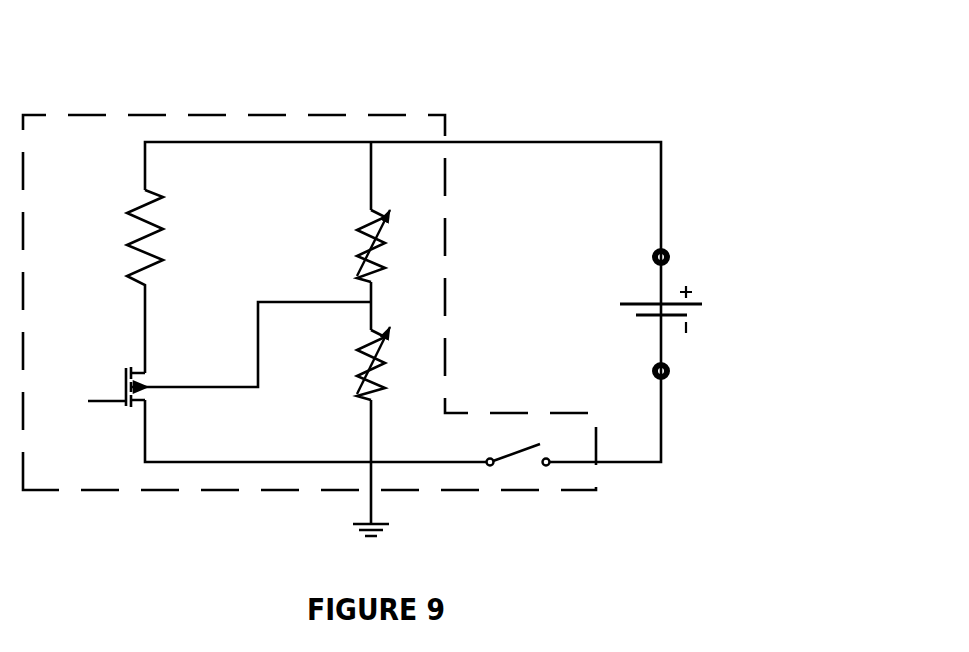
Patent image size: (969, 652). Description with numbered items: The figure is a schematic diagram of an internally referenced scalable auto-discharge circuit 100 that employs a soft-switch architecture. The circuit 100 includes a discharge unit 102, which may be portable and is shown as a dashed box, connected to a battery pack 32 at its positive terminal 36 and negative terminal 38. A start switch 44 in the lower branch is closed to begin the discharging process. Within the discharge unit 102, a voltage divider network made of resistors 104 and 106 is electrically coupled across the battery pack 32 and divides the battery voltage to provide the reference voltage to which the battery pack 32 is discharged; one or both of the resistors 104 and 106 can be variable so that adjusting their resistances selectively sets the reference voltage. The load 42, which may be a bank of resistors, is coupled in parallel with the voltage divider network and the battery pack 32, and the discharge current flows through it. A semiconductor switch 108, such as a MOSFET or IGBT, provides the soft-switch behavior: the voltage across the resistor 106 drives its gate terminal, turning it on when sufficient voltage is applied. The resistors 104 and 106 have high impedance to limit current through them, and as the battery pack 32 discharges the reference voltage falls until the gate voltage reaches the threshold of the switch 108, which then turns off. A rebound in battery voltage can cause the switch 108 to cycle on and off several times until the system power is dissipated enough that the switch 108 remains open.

The auto-discharge circuit 100 is at (186, 51).
The discharge unit 102 is at (392, 111).
The load 42 is at (128, 243).
The resistor 104 is at (360, 252).
The resistor 106 is at (360, 371).
The semiconductor switch 108 is at (128, 386).
The battery pack 32 is at (620, 304).
The positive terminal 36 is at (670, 257).
The negative terminal 38 is at (670, 372).
The start switch 44 is at (520, 452).